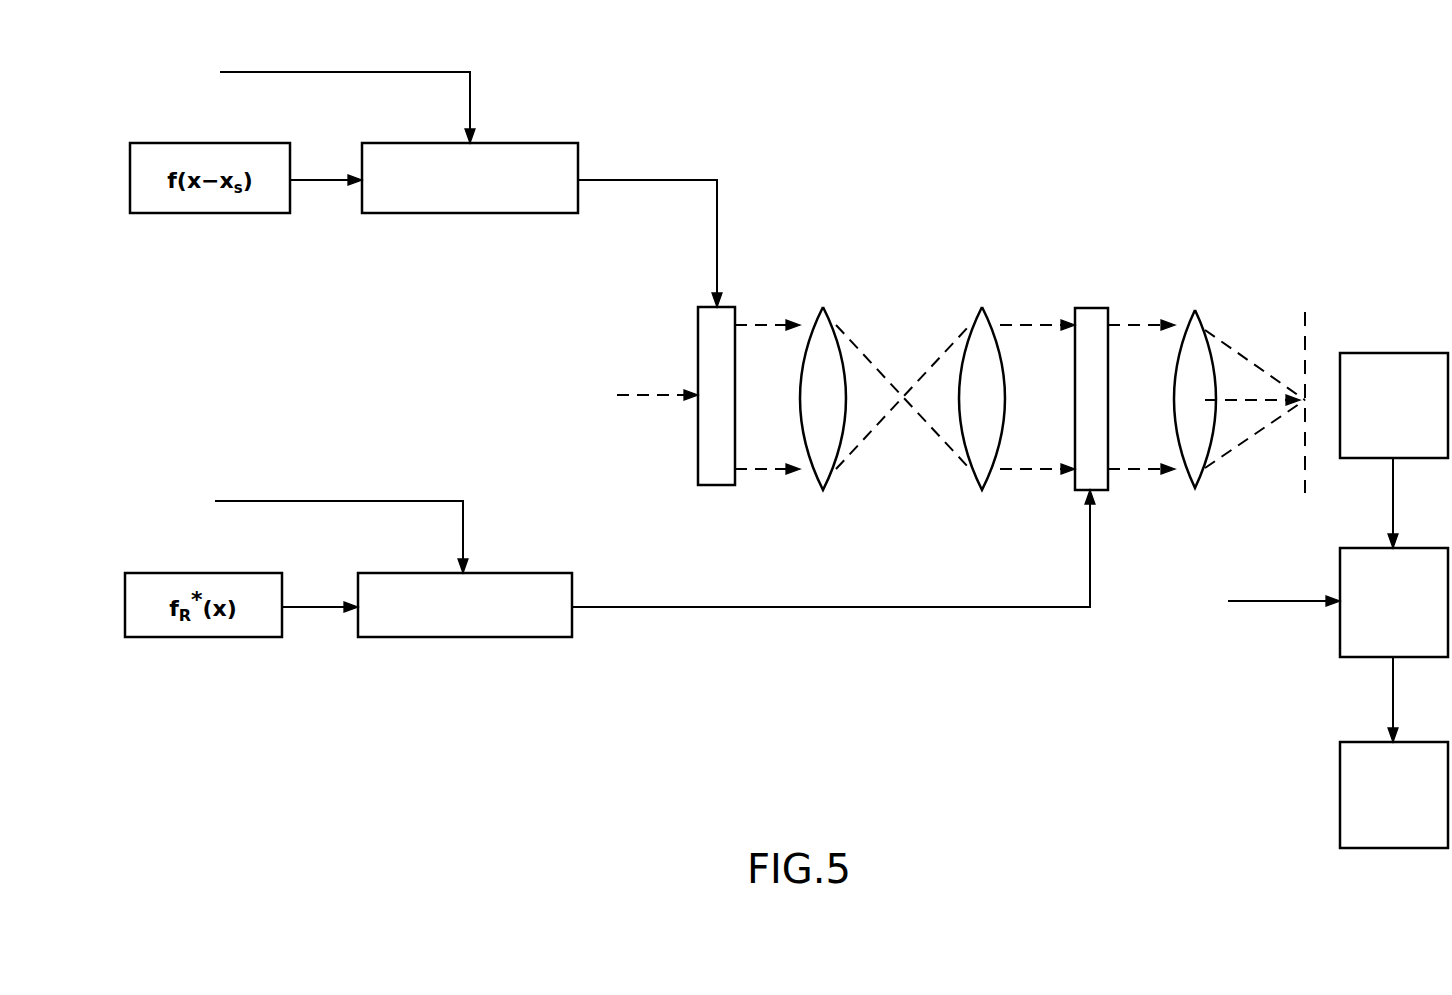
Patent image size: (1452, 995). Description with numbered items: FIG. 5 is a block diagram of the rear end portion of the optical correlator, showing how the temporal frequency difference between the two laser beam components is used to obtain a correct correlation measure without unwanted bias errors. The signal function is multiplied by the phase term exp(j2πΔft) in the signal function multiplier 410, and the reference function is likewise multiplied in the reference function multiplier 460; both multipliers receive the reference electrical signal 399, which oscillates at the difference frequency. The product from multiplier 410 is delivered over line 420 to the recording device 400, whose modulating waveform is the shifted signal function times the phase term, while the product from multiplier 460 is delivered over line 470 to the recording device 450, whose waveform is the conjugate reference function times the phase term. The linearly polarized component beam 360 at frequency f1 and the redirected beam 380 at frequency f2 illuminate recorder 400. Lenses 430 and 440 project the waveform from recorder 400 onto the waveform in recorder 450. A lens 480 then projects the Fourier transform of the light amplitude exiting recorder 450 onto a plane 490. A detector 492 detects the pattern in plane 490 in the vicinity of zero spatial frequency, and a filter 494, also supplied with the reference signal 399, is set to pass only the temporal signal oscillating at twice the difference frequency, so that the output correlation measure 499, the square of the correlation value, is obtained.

The reference electrical signal 399 is at (750, 339).
The signal function multiplier 410 is at (508, 143).
The multiplier output line 420 is at (650, 180).
The recording device 400 is at (733, 485).
The linearly polarized component beam f1 360 is at (580, 401).
The redirected beam direction f2 380 is at (580, 401).
The lens 430 is at (828, 315).
The lens 440 is at (986, 320).
The recording device 450 is at (1083, 308).
The lens 480 is at (1190, 482).
The plane 490 is at (1305, 319).
The detector 492 is at (1403, 353).
The filter 494 is at (1340, 640).
The output correlation measure 499 is at (1340, 805).
The reference function multiplier 460 is at (373, 623).
The multiplier output line 470 is at (880, 607).